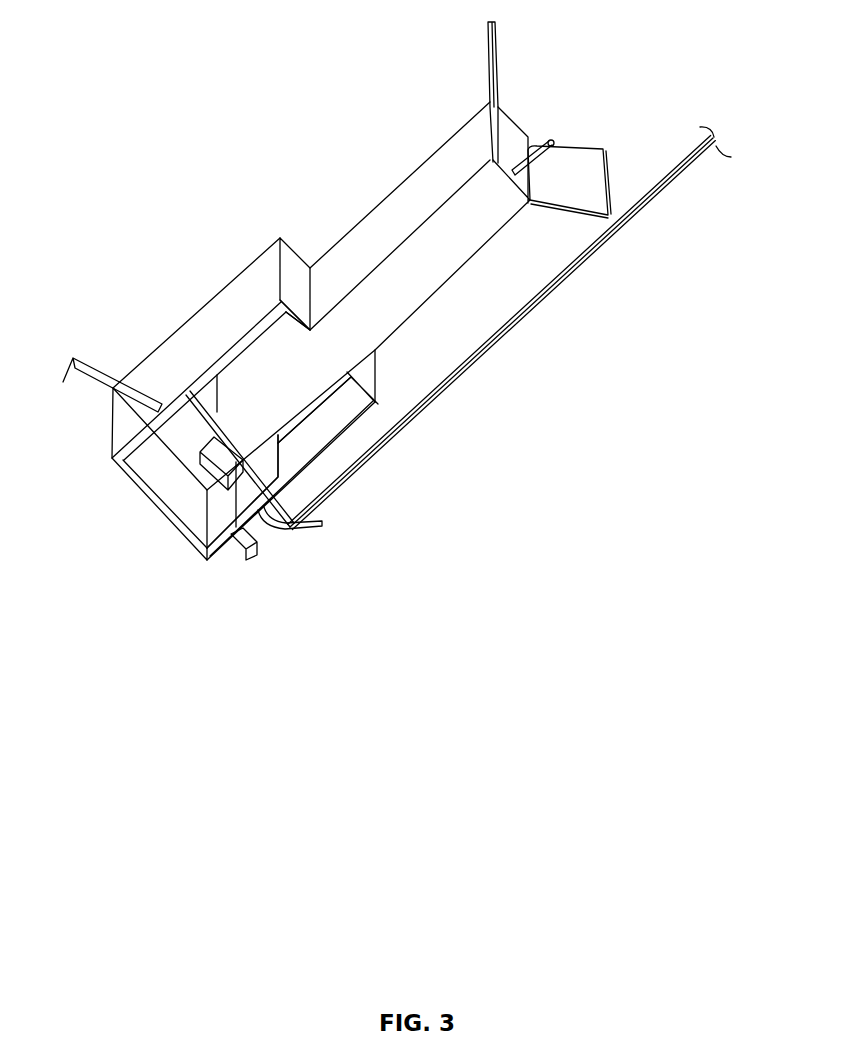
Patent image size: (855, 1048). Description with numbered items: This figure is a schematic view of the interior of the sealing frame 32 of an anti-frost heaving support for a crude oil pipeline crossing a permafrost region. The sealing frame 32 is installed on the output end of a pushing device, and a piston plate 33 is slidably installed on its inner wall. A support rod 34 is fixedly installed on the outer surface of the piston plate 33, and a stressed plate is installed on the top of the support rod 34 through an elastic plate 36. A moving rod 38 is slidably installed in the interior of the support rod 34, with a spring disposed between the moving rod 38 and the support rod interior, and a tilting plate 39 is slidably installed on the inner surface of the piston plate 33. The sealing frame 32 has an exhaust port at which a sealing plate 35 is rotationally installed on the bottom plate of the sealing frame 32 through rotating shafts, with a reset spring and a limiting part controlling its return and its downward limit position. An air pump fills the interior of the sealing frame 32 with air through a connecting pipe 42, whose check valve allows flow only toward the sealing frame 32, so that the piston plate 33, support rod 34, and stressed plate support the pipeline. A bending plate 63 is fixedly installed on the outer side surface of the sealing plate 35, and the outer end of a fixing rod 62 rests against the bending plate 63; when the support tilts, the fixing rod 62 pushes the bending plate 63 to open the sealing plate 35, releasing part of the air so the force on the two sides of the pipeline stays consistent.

The sealing frame 32 is at (348, 420).
The piston plate 33 is at (283, 477).
The support rod 34 is at (300, 380).
The sealing plate 35 is at (263, 505).
The elastic plate 36 is at (582, 185).
The moving rod 38 is at (553, 143).
The tilting plate 39 is at (220, 458).
The connecting pipe 42 is at (111, 385).
The fixing rod 62 is at (518, 327).
The bending plate 63 is at (290, 528).